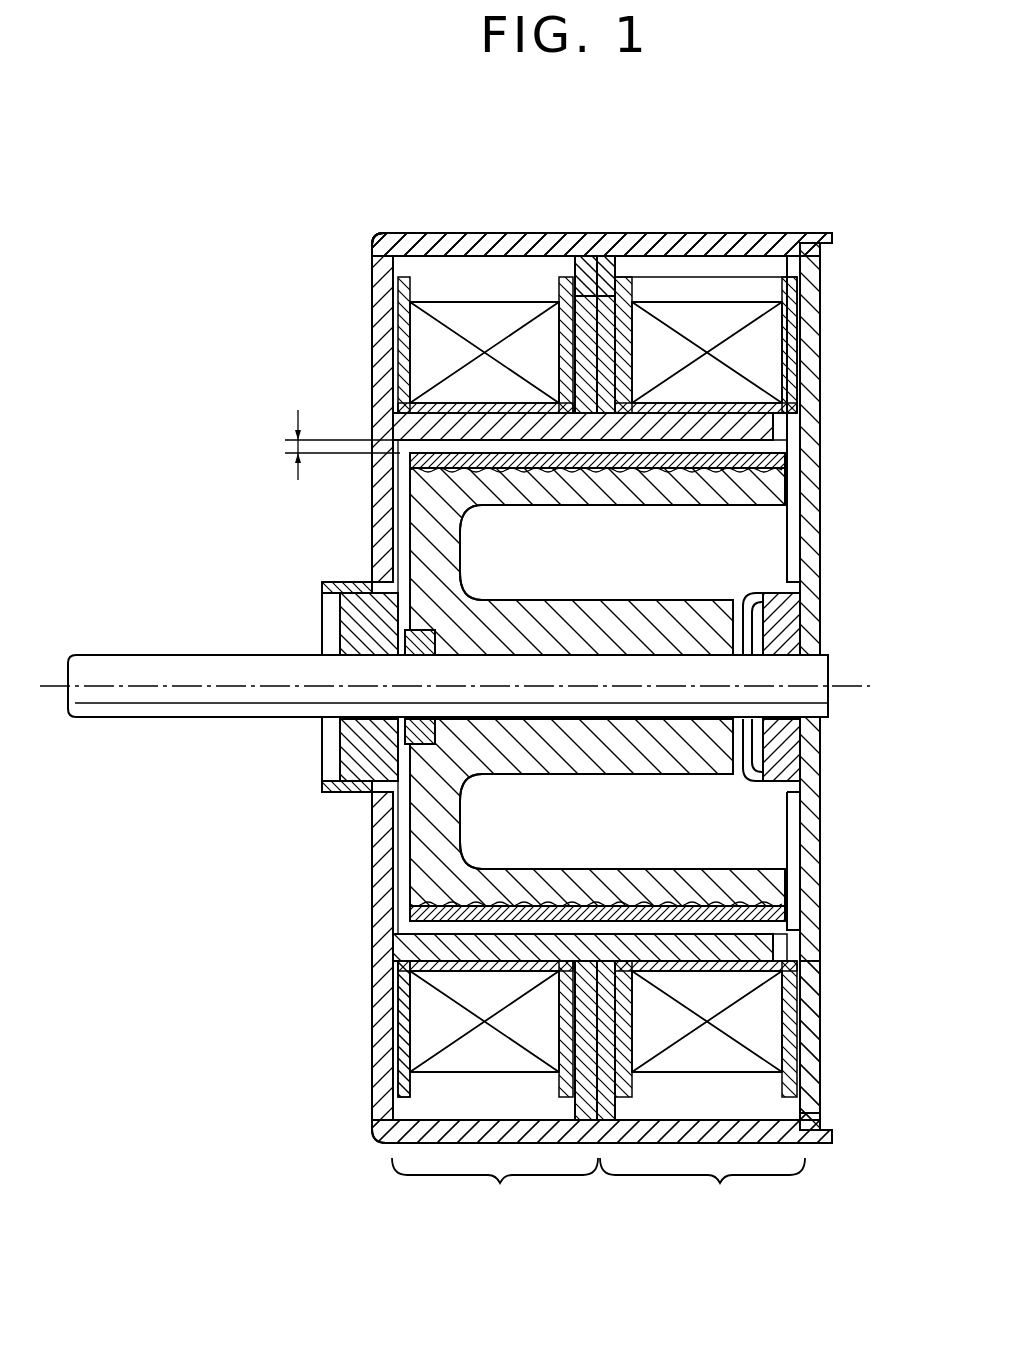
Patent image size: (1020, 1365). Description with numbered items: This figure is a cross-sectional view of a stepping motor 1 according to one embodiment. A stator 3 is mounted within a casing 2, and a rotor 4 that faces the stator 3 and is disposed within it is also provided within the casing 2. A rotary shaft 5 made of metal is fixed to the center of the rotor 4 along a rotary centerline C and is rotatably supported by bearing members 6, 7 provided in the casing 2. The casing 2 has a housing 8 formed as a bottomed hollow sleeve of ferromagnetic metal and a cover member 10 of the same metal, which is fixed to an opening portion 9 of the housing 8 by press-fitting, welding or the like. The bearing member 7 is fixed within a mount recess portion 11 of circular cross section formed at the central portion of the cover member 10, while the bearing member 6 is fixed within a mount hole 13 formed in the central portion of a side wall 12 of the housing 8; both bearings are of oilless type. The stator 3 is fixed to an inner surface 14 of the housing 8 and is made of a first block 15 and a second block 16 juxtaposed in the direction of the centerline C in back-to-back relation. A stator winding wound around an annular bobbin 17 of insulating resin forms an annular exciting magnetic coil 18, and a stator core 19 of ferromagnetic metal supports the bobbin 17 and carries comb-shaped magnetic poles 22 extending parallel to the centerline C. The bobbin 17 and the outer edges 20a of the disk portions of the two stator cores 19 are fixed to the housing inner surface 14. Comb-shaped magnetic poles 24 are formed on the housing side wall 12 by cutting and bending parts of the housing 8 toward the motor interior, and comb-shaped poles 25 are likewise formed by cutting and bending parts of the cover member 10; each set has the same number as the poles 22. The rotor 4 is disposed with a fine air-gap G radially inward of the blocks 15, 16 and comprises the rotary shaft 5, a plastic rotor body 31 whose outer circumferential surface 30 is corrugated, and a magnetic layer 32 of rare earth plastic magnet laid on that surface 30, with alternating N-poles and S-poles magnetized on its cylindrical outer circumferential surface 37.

The motor 1 is at (773, 170).
The casing 2 is at (486, 226).
The stator 3 is at (667, 281).
The rotor 4 is at (770, 816).
The rotary shaft 5 is at (157, 655).
The bearing member 6 is at (340, 606).
The bearing member 7 is at (820, 622).
The housing 8 is at (413, 233).
The opening portion 9 is at (820, 258).
The cover member 10 is at (822, 877).
The mount recess portion 11 is at (792, 776).
The side wall 12 is at (378, 906).
The mount hole 13 is at (340, 778).
The inner surface 14 is at (783, 255).
The first block 15 is at (495, 1191).
The second block 16 is at (702, 1191).
The bobbin 17 is at (425, 325).
The exciting magnetic coil 18 is at (430, 360).
The stator core 19 is at (572, 288).
The outer edge 20a is at (588, 256).
The comb-shaped magnetic pole 22 is at (795, 420).
The comb-shaped magnetic pole 24 is at (455, 422).
The comb-shaped pole 25 is at (797, 992).
The outer circumferential surface 30 is at (720, 935).
The rotor body 31 is at (714, 590).
The magnetic layer 32 is at (425, 950).
The cylindrical outer circumferential surface 37 is at (800, 1012).
The air-gap G is at (326, 445).
The rotary centerline C is at (468, 685).